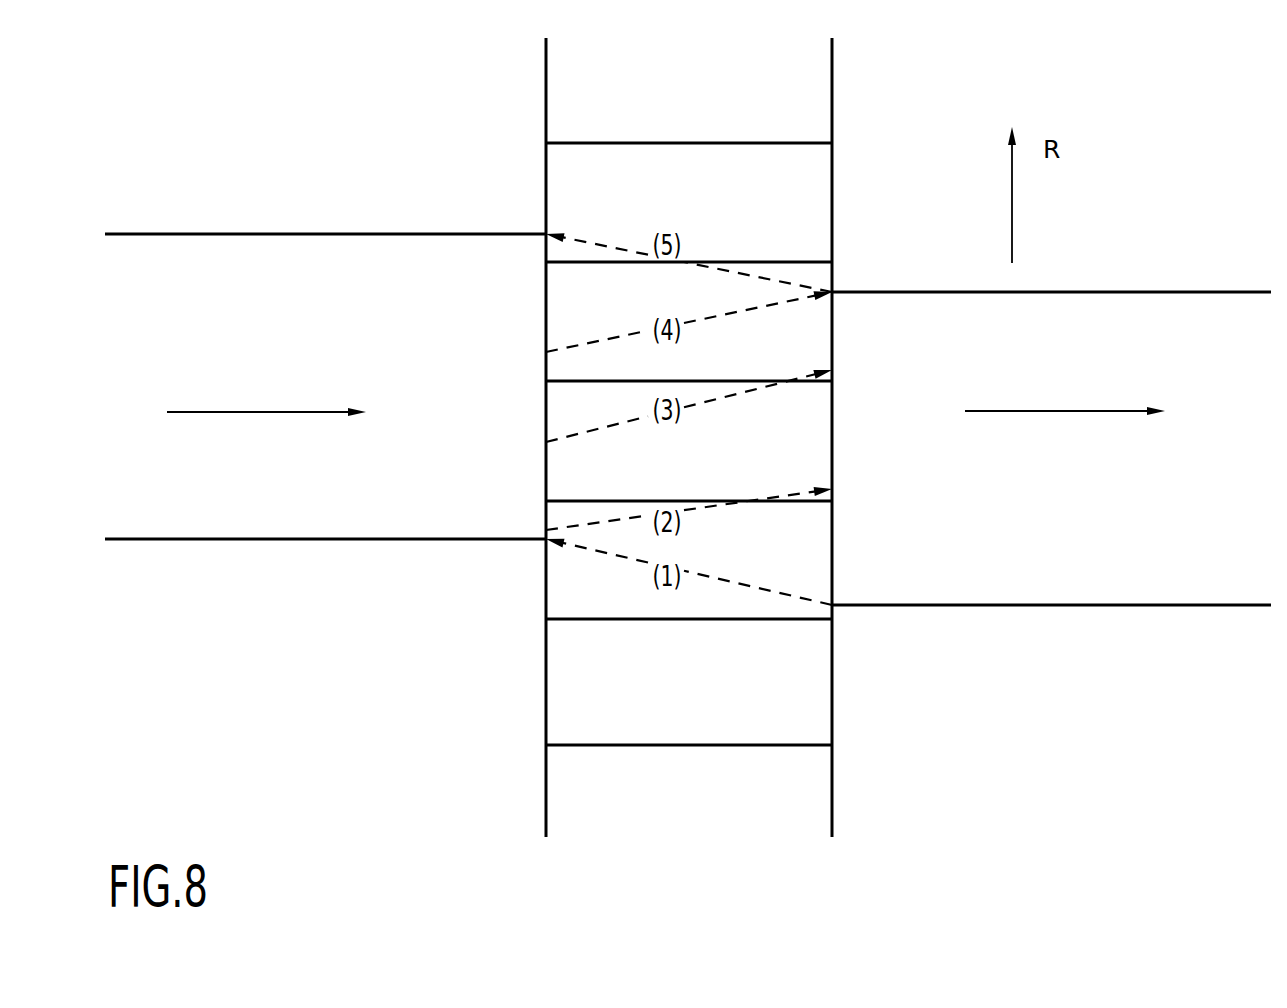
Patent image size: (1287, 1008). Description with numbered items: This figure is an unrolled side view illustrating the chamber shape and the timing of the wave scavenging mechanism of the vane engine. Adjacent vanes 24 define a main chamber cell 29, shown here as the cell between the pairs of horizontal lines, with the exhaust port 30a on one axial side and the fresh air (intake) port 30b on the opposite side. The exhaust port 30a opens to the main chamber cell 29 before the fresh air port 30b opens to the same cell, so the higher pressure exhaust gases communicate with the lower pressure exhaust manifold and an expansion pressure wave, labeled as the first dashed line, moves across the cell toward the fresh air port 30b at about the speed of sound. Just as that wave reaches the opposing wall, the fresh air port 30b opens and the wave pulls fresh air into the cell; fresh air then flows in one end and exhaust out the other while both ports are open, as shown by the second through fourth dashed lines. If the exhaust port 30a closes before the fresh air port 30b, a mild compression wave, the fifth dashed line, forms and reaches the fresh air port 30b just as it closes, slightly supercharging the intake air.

The vane 24 is at (832, 140).
The main chamber cell 29 is at (563, 731).
The exhaust port 30a is at (1051, 448).
The fresh air (intake) port 30b is at (325, 386).